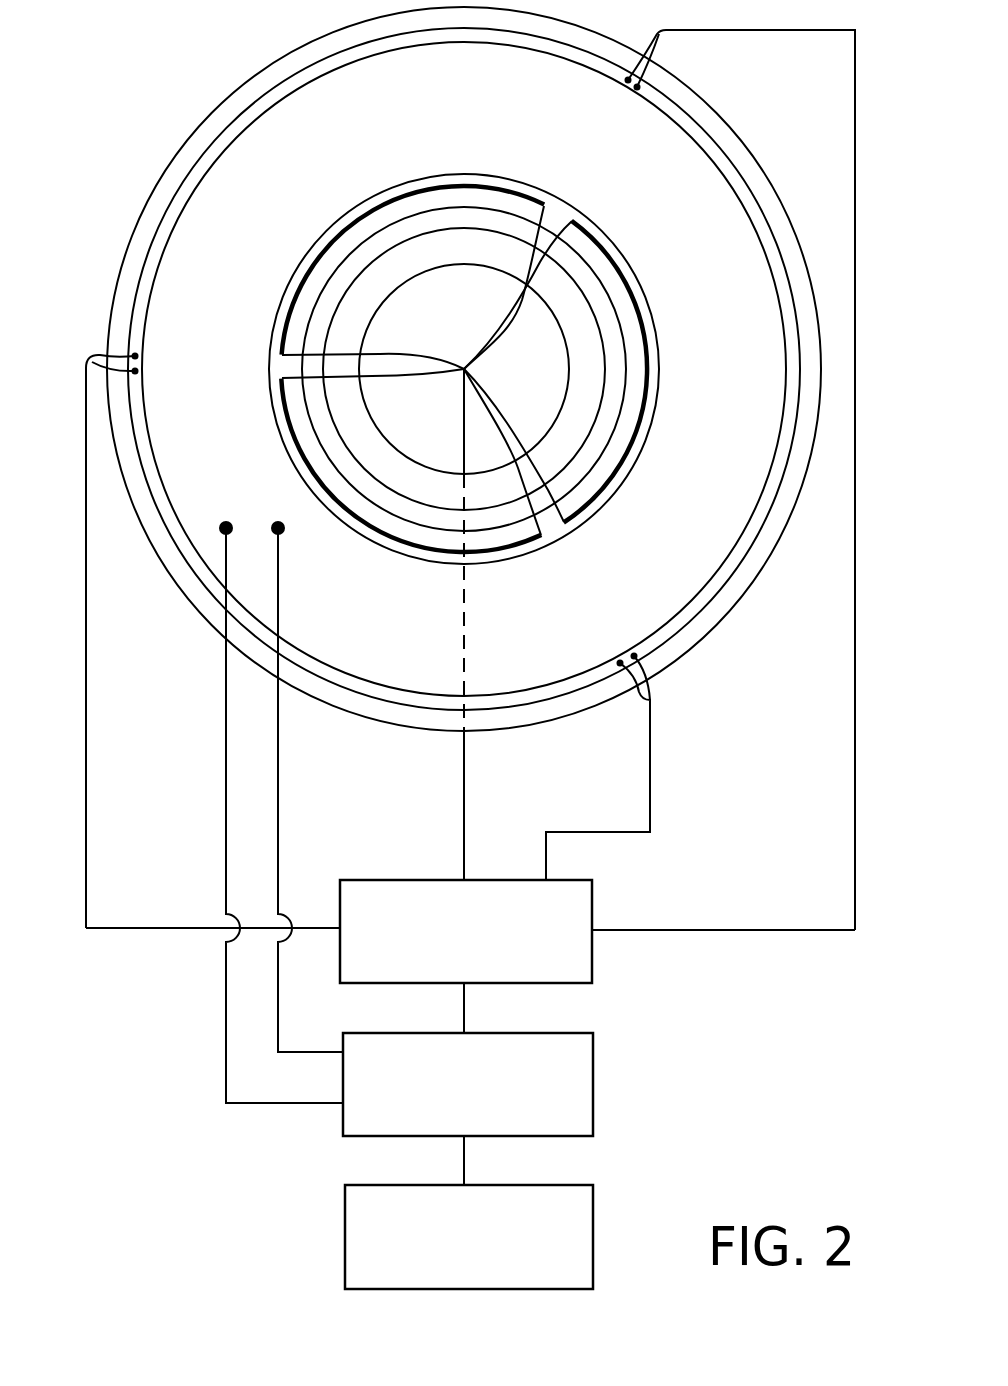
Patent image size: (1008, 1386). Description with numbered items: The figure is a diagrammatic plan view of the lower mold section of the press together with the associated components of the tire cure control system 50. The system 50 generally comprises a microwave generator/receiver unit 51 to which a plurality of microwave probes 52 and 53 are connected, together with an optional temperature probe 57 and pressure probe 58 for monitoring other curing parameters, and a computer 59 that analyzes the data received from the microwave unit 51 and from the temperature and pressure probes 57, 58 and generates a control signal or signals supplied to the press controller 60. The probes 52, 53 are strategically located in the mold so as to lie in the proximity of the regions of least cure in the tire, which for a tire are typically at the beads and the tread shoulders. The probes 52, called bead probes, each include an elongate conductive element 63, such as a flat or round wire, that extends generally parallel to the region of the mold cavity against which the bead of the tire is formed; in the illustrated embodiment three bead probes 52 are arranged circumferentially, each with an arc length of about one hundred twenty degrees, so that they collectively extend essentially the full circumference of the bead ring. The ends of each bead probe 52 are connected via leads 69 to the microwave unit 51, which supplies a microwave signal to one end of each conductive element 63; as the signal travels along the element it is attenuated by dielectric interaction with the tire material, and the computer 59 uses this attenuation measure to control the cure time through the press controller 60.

The tire cure control system 50 is at (188, 1010).
The microwave generator/receiver unit 51 is at (390, 880).
The bead probes 52 is at (403, 192).
The microwave probes 53 is at (141, 357).
The temperature probe 57 is at (226, 521).
The pressure probe 58 is at (279, 521).
The computer 59 is at (593, 1066).
The press controller 60 is at (345, 1223).
The conductive element 63 is at (347, 226).
The leads 69 is at (419, 368).